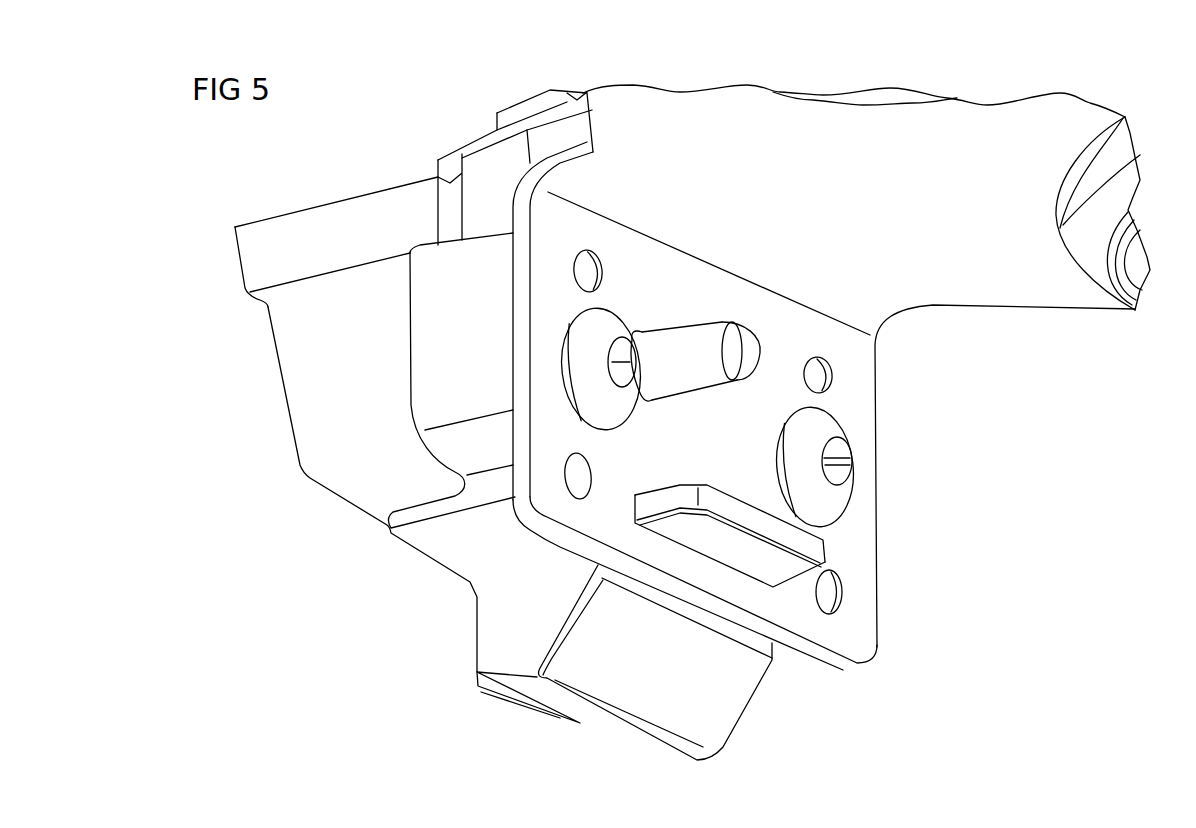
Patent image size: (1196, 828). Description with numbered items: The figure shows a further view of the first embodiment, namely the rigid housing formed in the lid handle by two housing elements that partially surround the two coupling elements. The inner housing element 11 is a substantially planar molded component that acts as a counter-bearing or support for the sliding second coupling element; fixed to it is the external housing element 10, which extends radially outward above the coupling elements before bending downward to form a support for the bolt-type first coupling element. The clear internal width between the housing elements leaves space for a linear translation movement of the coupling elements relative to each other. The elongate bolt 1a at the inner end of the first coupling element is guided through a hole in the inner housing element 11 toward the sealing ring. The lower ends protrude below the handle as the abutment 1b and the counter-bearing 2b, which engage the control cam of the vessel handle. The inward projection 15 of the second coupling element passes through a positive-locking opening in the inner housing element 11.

The external housing element 10 is at (252, 258).
The inner housing element 11 is at (1030, 298).
The bolt 1a is at (757, 350).
The abutment 1b is at (513, 720).
The counter-bearing 2b is at (710, 697).
The projection 15 is at (817, 578).